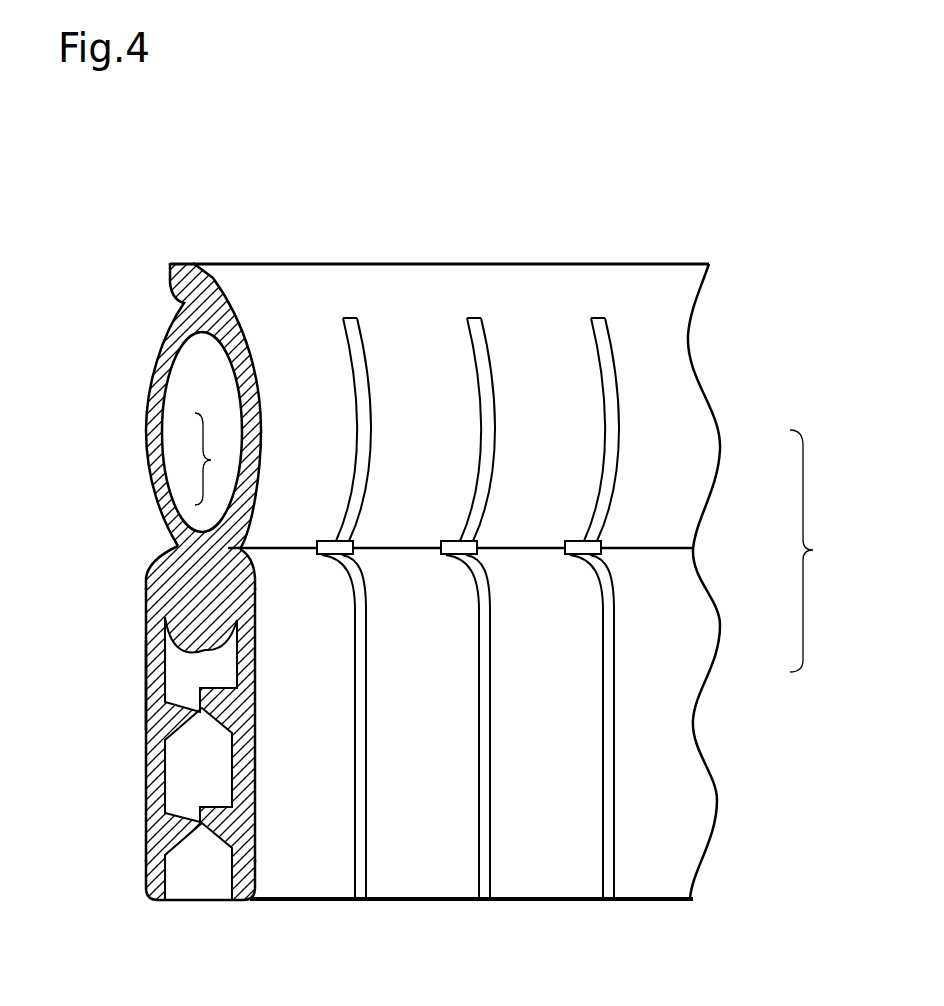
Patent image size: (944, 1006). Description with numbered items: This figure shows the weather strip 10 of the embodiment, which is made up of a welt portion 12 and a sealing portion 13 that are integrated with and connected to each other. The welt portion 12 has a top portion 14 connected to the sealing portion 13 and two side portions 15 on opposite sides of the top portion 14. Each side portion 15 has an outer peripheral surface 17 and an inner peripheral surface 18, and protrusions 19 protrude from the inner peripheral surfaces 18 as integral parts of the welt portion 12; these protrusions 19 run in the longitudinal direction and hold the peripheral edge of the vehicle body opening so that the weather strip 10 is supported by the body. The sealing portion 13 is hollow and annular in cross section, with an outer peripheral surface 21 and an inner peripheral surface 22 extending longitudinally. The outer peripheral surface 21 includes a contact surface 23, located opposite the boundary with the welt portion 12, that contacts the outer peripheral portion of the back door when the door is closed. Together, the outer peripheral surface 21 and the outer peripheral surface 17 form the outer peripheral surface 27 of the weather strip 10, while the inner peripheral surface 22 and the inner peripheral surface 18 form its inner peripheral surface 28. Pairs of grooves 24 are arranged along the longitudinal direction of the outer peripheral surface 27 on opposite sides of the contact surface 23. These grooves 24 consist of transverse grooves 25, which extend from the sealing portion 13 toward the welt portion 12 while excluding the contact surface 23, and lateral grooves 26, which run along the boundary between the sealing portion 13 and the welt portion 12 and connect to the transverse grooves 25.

The weather strip 10 is at (131, 238).
The welt portion 12 is at (152, 600).
The sealing portion 13 is at (153, 345).
The top portion 14 is at (165, 573).
The side portions 15 is at (147, 862).
The outer peripheral surface 17 is at (146, 683).
The inner peripheral surface 18 is at (205, 650).
The protrusions 19 is at (185, 723).
The outer peripheral surface 21 is at (668, 452).
The inner peripheral surface 22 is at (185, 362).
The contact surface 23 is at (268, 287).
The grooves 24 is at (349, 316).
The transverse grooves 25 is at (376, 397).
The lateral grooves 26 is at (345, 545).
The outer peripheral surface 27 is at (820, 551).
The inner peripheral surface 28 is at (217, 459).